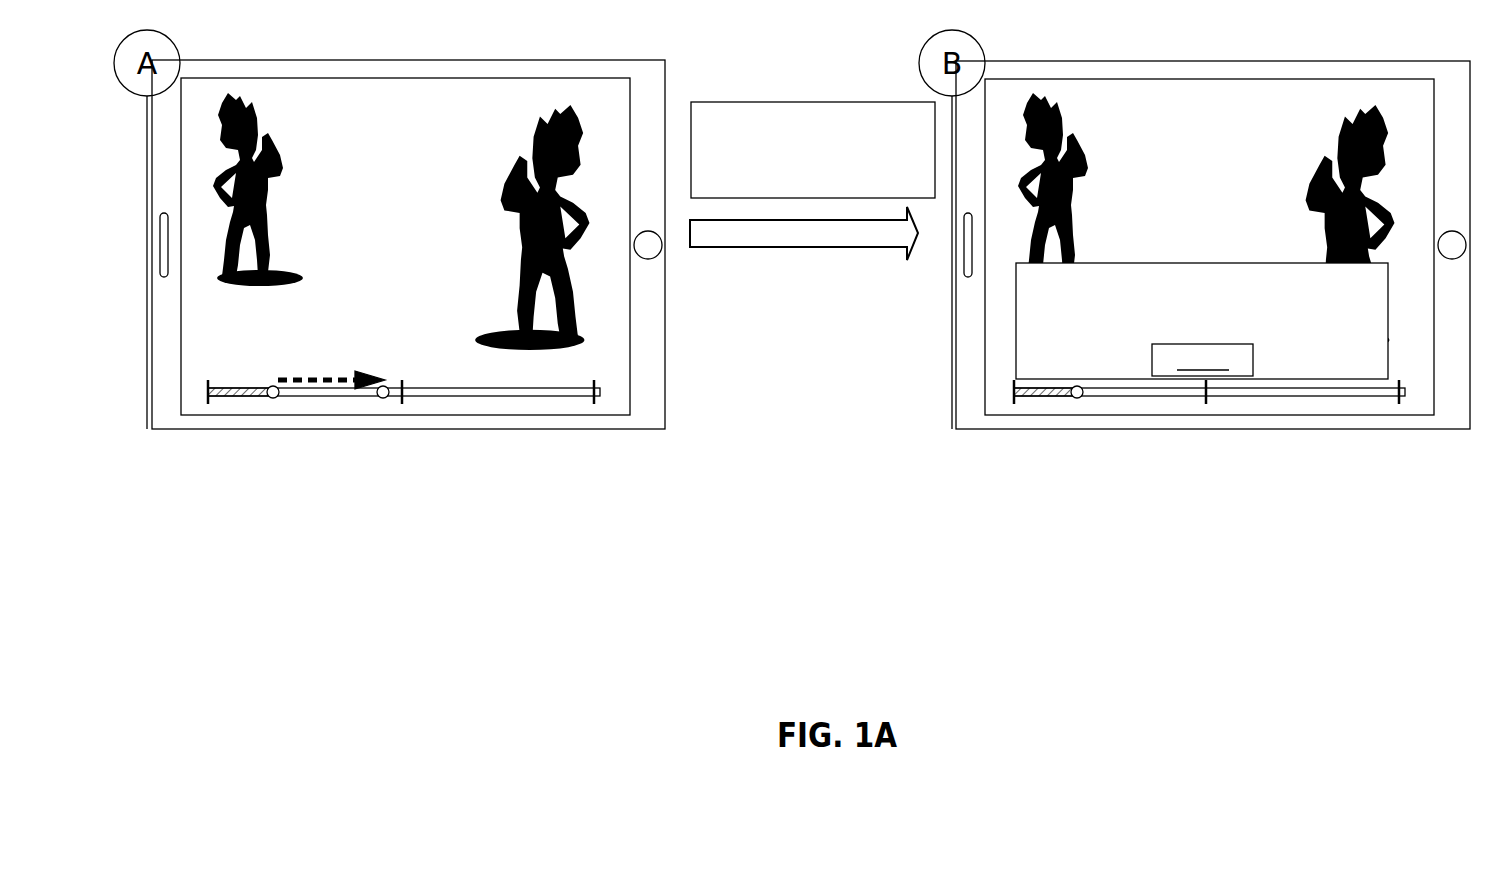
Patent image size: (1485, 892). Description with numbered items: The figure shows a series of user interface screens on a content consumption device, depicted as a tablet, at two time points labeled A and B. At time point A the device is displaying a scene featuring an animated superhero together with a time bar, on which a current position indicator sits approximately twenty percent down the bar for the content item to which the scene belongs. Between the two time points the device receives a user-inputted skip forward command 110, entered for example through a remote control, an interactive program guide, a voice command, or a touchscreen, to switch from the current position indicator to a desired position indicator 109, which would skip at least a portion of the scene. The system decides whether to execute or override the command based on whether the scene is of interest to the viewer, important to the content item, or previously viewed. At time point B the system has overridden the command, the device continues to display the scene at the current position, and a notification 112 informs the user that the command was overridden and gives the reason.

The desired position indicator 109 is at (378, 397).
The user-inputted skip forward command 110 is at (853, 102).
The notification 112 is at (1275, 380).